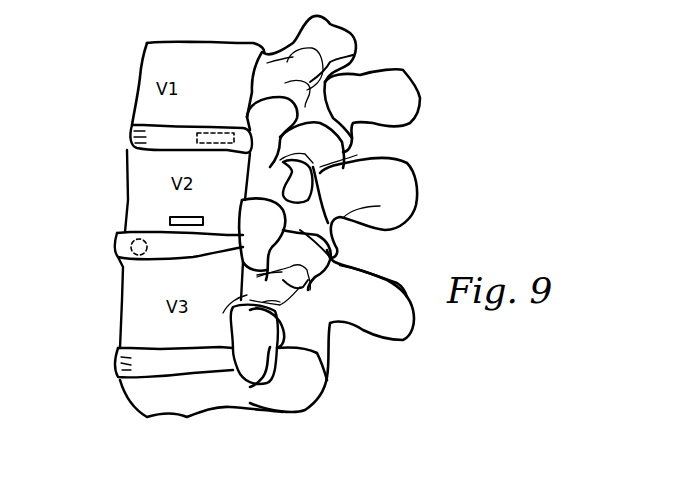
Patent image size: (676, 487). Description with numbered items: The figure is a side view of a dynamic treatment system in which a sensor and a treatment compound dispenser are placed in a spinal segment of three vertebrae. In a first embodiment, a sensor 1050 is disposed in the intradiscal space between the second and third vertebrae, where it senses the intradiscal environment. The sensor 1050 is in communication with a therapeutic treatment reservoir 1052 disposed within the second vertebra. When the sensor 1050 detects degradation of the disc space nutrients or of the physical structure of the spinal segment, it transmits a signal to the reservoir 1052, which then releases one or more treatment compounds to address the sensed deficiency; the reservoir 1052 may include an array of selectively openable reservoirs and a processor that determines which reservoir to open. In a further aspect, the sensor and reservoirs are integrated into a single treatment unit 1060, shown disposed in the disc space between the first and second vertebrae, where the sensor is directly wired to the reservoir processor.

The sensor 1050 is at (131, 247).
The therapeutic treatment reservoir 1052 is at (170, 221).
The single treatment unit 1060 is at (225, 130).